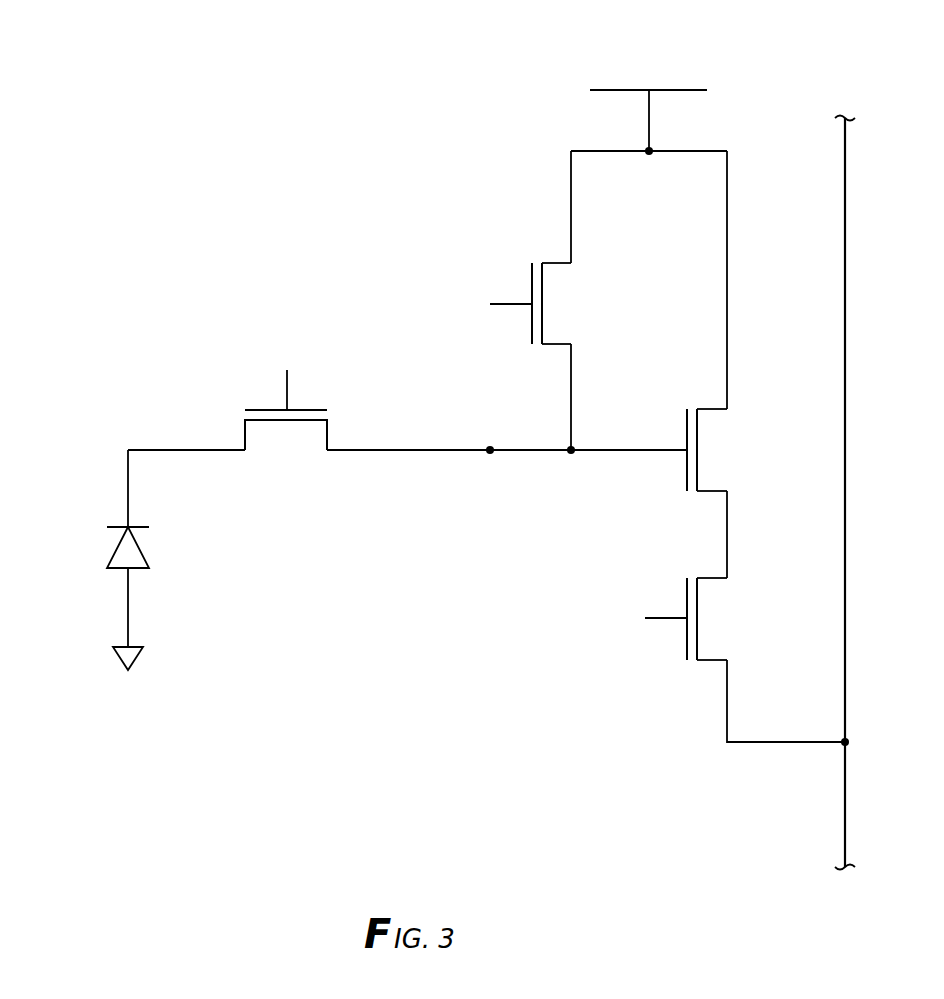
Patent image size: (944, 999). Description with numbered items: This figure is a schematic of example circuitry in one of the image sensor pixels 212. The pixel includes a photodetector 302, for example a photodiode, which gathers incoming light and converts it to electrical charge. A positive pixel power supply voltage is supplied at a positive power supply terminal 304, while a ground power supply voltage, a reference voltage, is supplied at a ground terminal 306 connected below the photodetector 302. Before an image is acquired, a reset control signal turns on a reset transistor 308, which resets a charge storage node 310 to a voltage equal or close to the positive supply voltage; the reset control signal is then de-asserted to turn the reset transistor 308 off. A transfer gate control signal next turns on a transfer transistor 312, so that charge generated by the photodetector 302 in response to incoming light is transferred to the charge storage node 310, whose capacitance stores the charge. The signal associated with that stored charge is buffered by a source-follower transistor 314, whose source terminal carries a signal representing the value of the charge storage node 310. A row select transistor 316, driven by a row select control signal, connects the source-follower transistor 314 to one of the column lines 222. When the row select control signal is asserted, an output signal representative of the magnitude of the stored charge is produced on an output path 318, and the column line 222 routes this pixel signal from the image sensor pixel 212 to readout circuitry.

The image sensor pixel 212 is at (264, 48).
The column line 222 is at (846, 278).
The photodetector 302 is at (114, 552).
The positive power supply terminal 304 is at (600, 90).
The ground terminal 306 is at (140, 660).
The reset transistor 308 is at (558, 262).
The charge storage node 310 is at (490, 448).
The transfer transistor 312 is at (244, 436).
The source-follower transistor 314 is at (710, 409).
The row select transistor 316 is at (712, 578).
The output path 318 is at (821, 742).